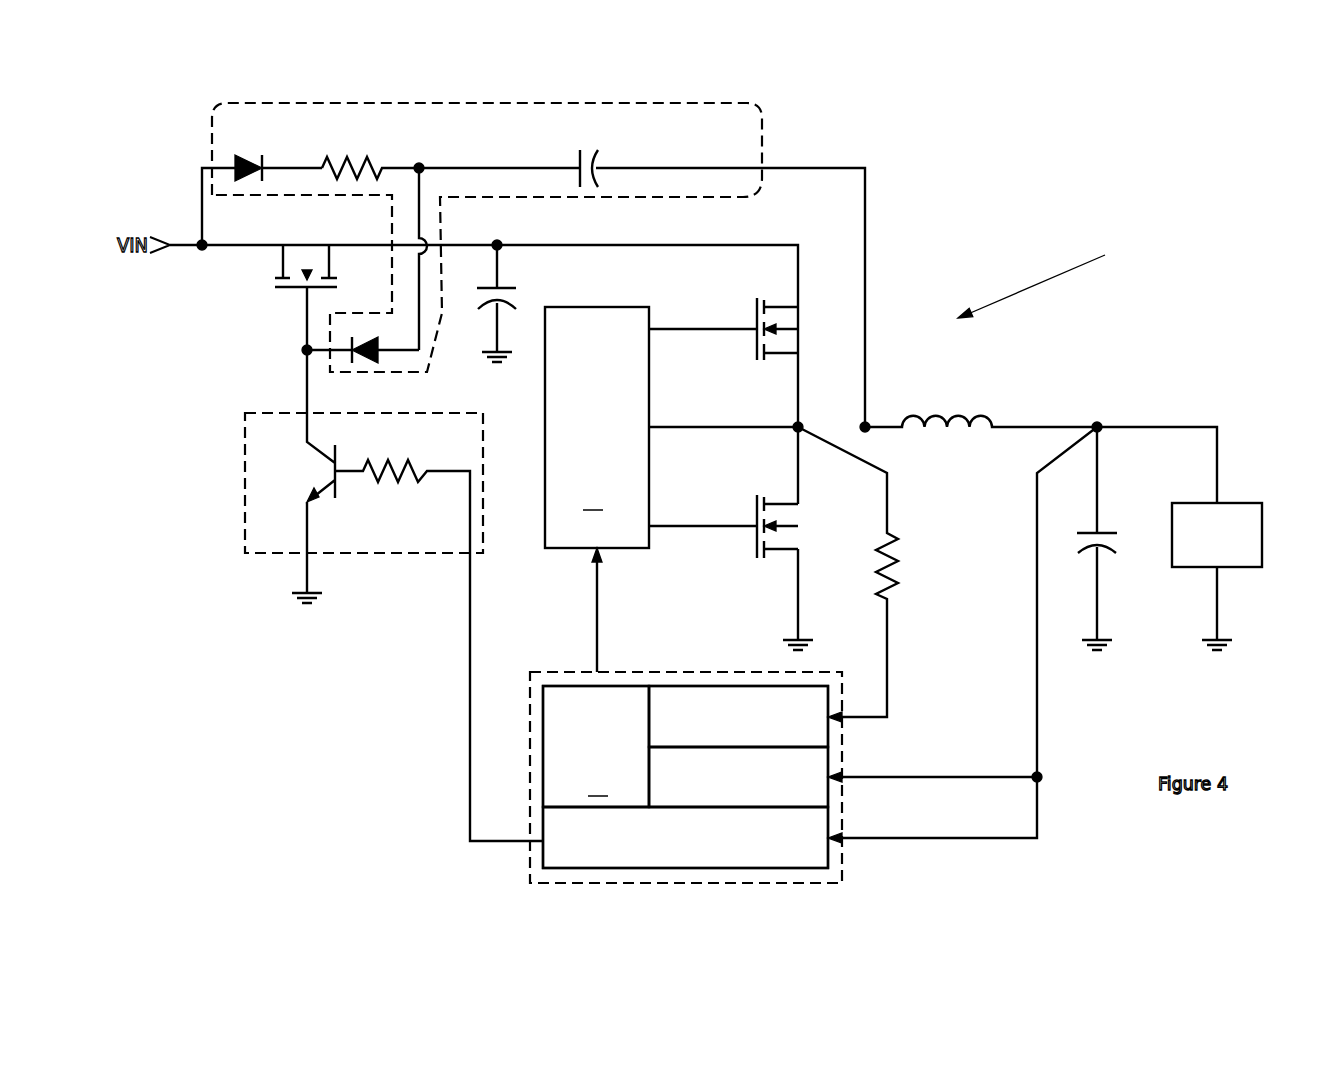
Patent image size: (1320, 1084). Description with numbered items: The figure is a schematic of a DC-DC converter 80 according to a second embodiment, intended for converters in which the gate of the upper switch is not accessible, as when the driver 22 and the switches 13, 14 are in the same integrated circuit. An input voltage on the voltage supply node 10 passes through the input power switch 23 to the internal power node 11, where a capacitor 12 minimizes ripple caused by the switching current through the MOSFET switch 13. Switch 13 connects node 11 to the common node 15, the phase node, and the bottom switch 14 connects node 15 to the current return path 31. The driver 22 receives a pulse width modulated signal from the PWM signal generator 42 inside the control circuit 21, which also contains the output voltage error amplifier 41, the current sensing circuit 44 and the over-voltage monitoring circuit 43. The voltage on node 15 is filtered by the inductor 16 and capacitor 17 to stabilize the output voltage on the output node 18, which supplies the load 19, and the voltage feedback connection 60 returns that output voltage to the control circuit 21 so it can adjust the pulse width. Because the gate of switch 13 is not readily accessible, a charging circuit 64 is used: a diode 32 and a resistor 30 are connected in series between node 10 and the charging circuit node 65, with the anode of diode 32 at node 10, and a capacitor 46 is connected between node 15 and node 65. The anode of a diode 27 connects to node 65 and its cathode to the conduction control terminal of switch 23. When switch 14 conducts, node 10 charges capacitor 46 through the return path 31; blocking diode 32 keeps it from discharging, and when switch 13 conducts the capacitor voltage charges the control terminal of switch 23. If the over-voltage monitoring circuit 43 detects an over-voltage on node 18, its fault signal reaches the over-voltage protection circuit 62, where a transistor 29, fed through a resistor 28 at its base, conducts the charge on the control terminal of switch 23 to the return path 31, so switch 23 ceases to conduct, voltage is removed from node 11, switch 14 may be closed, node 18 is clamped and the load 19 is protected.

The voltage supply node 10 is at (207, 252).
The internal power node 11 is at (498, 243).
The capacitor 12 is at (484, 290).
The switch 13 is at (800, 333).
The switch 14 is at (797, 525).
The common node 15 is at (796, 426).
The inductor 16 is at (928, 415).
The capacitor 17 is at (1100, 527).
The output node 18 is at (1100, 425).
The load 19 is at (1220, 500).
The control circuit 21 is at (632, 668).
The driver 22 is at (671, 427).
The input power switch 23 is at (292, 242).
The diode 27 is at (362, 372).
The resistor 28 is at (383, 485).
The transistor 29 is at (310, 472).
The resistor 30 is at (357, 150).
The current return path 31 is at (300, 587).
The diode 32 is at (250, 153).
The output voltage error amplifier 41 is at (807, 787).
The pulse width modulated signal generator 42 is at (596, 746).
The over-voltage monitoring circuit 43 is at (807, 855).
The current sensing circuit 44 is at (780, 735).
The capacitor 46 is at (592, 150).
The voltage feedback connection 60 is at (1035, 670).
The over-voltage protection circuit 62 is at (357, 560).
The charging circuit 64 is at (727, 132).
The charging circuit node 65 is at (421, 166).
The DC-DC converter 80 is at (1050, 272).